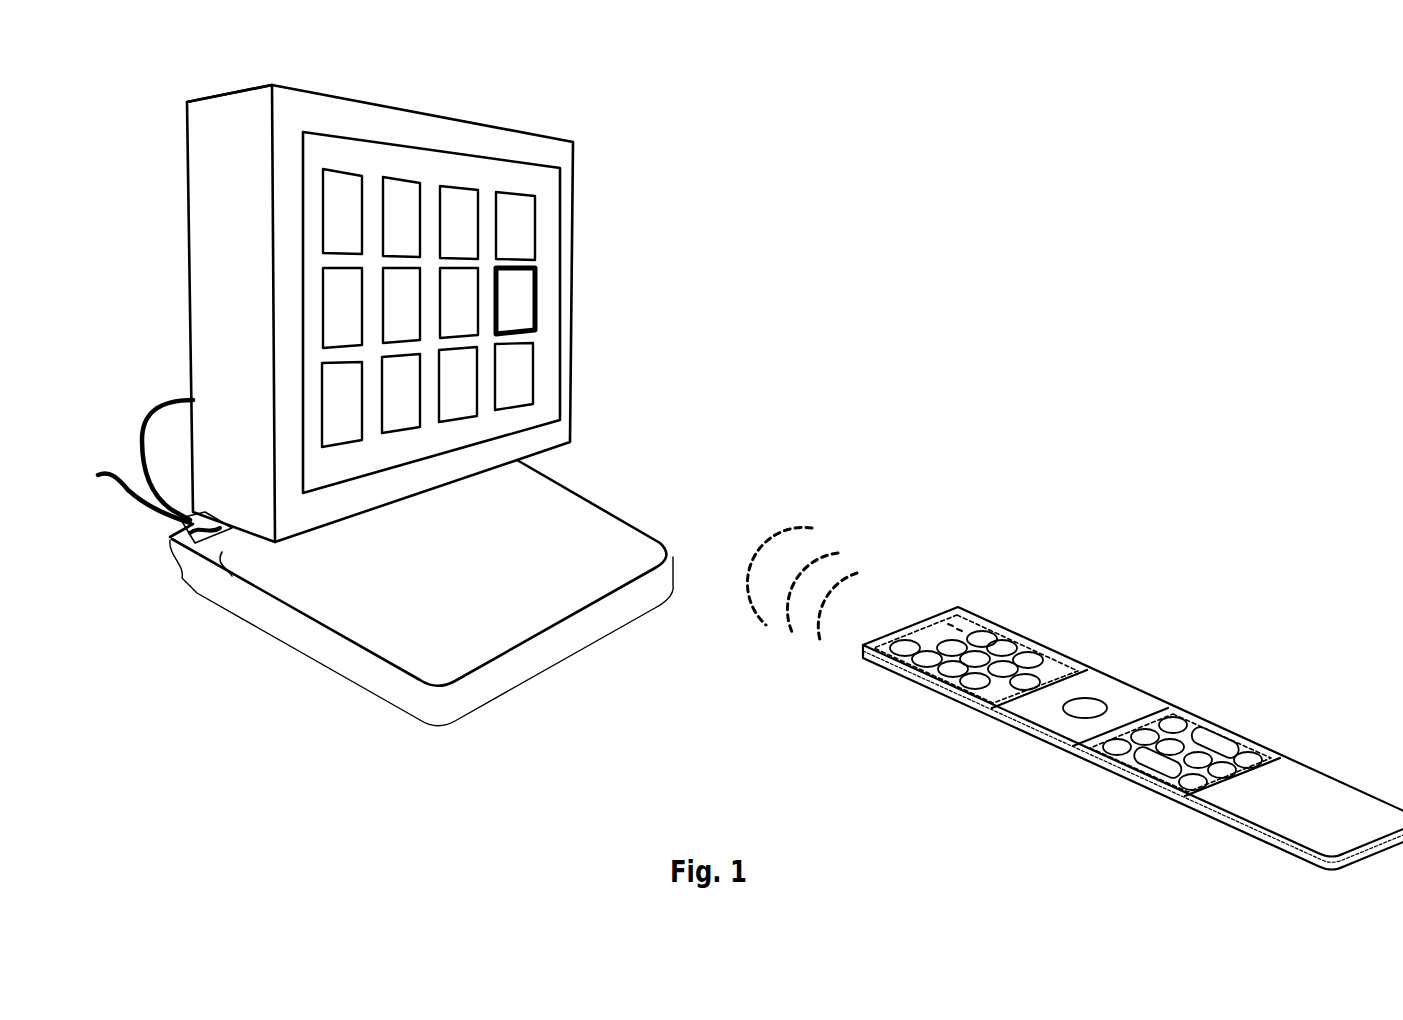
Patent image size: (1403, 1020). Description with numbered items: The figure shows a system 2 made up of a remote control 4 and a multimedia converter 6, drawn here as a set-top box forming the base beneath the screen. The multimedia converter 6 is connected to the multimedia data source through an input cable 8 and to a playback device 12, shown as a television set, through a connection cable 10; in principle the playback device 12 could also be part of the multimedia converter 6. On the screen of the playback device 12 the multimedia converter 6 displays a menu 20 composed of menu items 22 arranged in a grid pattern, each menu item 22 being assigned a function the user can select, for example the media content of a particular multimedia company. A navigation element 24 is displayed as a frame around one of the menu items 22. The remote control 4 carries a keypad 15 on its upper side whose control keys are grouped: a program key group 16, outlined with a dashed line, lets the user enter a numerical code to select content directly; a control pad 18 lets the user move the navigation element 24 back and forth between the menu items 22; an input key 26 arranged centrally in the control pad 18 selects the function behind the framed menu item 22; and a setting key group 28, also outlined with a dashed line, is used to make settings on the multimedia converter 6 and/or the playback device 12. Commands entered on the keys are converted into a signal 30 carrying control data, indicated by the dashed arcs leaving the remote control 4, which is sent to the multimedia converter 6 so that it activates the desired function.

The system 2 is at (1134, 192).
The remote control 4 is at (1349, 619).
The multimedia converter 6 is at (597, 506).
The input cable 8 is at (101, 466).
The connection cable 10 is at (145, 398).
The playback device 12 is at (571, 422).
The keypad 15 is at (1169, 640).
The program key group 16 is at (938, 617).
The control pad 18 is at (1120, 698).
The menu 20 is at (542, 189).
The menu item 22 is at (343, 170).
The navigation element 24 is at (536, 309).
The input key 26 is at (1090, 704).
The setting key group 28 is at (1220, 732).
The signal 30 is at (792, 527).